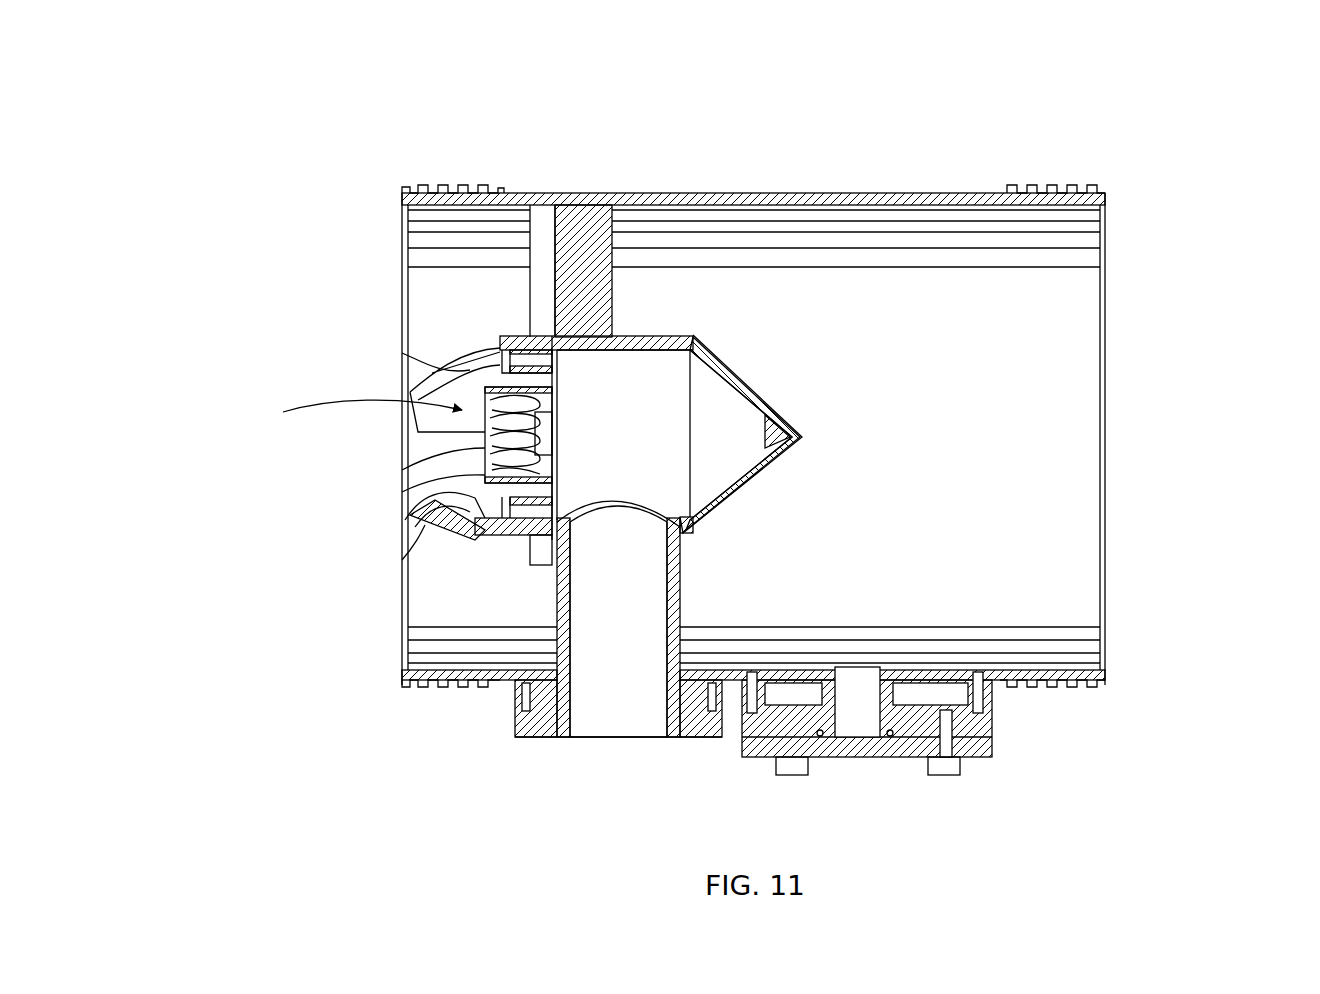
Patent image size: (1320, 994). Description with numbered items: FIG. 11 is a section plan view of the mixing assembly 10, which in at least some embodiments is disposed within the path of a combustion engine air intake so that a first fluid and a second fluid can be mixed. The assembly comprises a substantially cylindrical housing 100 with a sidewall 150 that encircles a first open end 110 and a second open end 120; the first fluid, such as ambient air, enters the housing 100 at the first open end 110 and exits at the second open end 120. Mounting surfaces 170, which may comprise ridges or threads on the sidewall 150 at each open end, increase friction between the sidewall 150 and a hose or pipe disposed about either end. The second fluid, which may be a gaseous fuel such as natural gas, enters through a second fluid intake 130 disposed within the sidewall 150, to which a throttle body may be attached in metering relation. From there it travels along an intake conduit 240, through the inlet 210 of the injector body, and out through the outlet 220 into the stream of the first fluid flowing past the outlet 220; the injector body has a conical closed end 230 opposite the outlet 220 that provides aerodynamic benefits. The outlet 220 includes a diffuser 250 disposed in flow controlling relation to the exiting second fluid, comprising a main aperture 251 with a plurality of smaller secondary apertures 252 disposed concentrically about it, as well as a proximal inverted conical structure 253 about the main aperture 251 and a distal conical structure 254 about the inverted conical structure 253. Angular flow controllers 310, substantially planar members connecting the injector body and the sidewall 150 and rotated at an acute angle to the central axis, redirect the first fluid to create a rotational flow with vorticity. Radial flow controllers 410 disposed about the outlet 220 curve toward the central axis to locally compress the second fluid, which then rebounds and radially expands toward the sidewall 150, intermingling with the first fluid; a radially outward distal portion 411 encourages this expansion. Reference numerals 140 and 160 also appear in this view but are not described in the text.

The mixing assembly 10 is at (1165, 133).
The housing 100 is at (1105, 195).
The first open end 110 is at (1115, 305).
The second open end 120 is at (323, 645).
The second fluid intake aperture 130 is at (617, 740).
The base block 140 is at (995, 735).
The sidewall 150 is at (755, 193).
The mounting base 160 is at (515, 715).
The mounting surface 170 is at (425, 190).
The inlet 210 is at (617, 505).
The outlet 220 is at (776, 322).
The conical closed end 230 is at (792, 405).
The intake conduit 240 is at (682, 577).
The diffuser 250 is at (485, 448).
The main aperture 251 is at (550, 430).
The secondary apertures 252 is at (555, 418).
The proximal inverted conical structure 253 is at (485, 472).
The distal conical structure 254 is at (480, 372).
The angular flow controller 310 is at (580, 200).
The radial flow controller 410 is at (432, 375).
The distal portion 411 is at (425, 517).